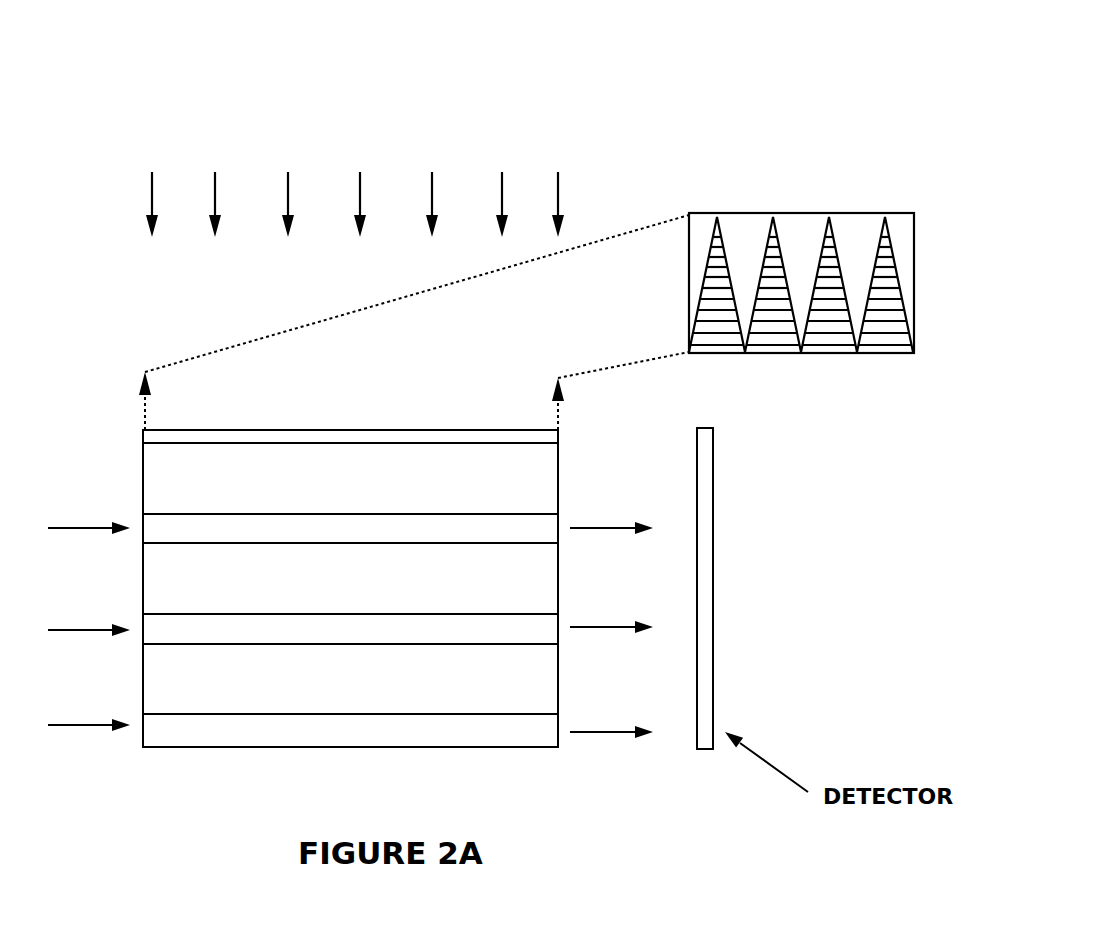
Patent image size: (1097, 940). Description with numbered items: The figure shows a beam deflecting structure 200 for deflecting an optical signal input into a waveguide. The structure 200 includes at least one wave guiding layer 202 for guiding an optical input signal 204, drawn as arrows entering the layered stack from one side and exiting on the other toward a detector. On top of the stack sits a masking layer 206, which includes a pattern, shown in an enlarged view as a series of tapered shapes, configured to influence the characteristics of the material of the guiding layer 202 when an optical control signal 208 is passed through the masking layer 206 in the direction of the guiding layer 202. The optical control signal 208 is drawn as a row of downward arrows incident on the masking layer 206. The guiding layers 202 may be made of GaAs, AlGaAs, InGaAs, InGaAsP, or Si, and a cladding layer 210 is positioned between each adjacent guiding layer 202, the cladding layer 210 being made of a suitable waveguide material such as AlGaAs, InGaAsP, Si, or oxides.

The beam deflecting structure 200 is at (815, 93).
The wave guiding layer 202 is at (327, 538).
The optical input signal 204 is at (70, 762).
The masking layer 206 is at (650, 203).
The optical control signal 208 is at (117, 180).
The cladding layer 210 is at (327, 497).